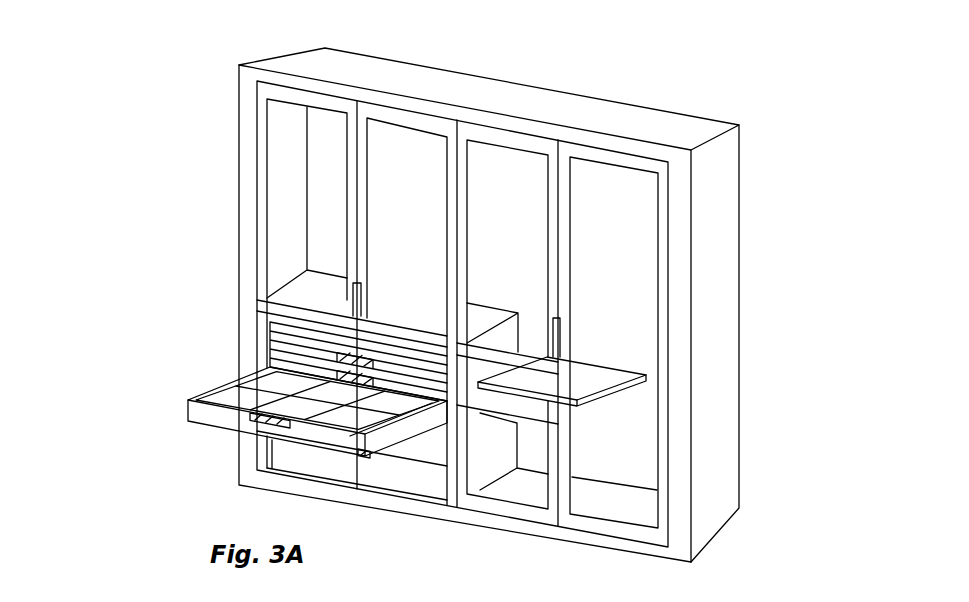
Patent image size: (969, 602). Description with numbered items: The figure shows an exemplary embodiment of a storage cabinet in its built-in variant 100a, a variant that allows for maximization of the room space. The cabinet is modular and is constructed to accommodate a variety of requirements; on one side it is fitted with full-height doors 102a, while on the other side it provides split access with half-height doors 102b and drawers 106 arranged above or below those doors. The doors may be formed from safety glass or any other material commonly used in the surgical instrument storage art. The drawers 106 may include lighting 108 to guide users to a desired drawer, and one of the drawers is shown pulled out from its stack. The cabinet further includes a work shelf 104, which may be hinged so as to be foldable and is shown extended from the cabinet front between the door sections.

The built-in variant 100a is at (164, 42).
The full-height doors 102a is at (640, 229).
The half-height doors 102b is at (292, 178).
The work shelves 104 is at (642, 373).
The drawers 106 is at (218, 390).
The lighting 108 is at (376, 340).